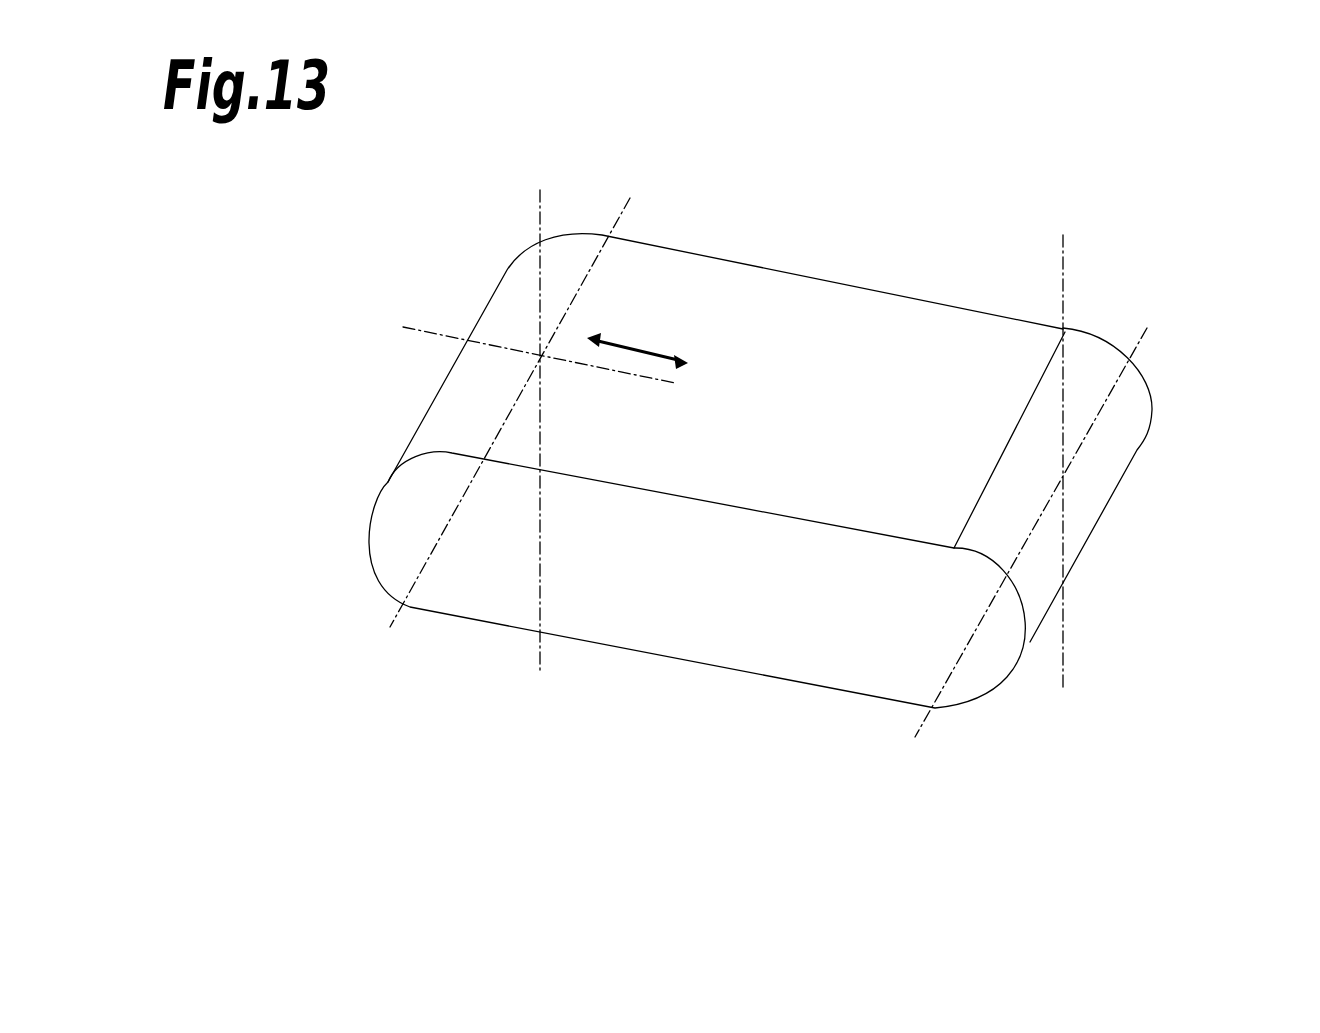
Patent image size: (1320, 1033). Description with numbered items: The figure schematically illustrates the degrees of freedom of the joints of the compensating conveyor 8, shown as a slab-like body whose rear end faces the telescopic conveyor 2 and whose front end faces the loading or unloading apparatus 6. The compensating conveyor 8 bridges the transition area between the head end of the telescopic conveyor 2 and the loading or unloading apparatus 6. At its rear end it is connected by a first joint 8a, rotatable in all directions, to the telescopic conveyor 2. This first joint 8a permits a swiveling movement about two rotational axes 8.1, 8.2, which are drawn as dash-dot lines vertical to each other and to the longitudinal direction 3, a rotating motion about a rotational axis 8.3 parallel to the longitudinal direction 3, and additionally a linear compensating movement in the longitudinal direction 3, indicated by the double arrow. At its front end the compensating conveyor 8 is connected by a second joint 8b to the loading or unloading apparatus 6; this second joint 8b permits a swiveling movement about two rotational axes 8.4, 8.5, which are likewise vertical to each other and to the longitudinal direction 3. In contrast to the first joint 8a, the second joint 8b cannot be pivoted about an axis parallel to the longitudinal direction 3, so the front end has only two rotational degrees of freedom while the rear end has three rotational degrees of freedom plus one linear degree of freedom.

The compensating conveyor 8 is at (817, 313).
The first joint 8a is at (428, 383).
The second joint 8b is at (1108, 558).
The rotational axis 8.1 is at (430, 555).
The rotational axis 8.2 is at (540, 603).
The rotational axis 8.3 is at (425, 335).
The rotational axis 8.4 is at (923, 713).
The rotational axis 8.5 is at (1063, 660).
The longitudinal direction 3 is at (627, 343).
The telescopic conveyor 2 is at (290, 328).
The loading or unloading apparatus 6 is at (1284, 553).